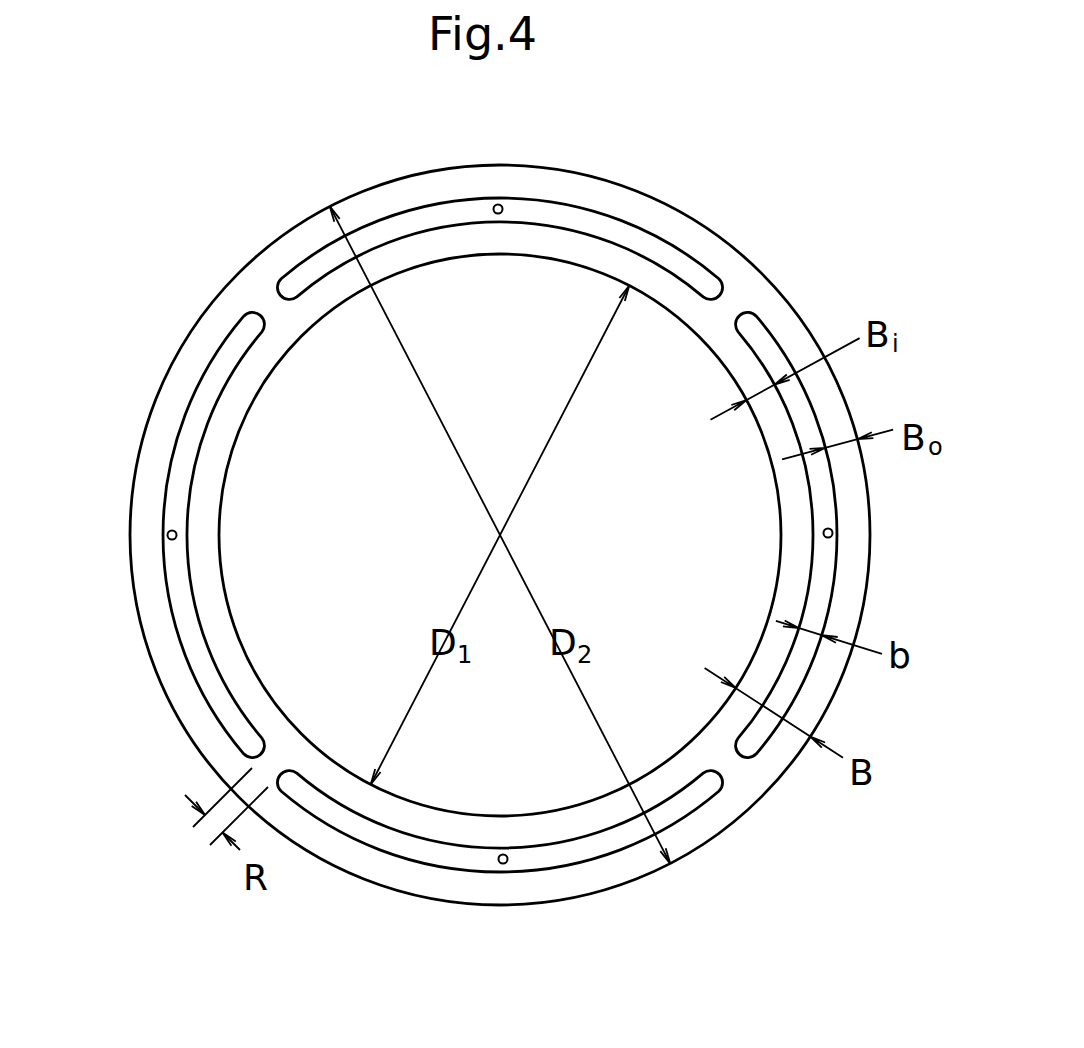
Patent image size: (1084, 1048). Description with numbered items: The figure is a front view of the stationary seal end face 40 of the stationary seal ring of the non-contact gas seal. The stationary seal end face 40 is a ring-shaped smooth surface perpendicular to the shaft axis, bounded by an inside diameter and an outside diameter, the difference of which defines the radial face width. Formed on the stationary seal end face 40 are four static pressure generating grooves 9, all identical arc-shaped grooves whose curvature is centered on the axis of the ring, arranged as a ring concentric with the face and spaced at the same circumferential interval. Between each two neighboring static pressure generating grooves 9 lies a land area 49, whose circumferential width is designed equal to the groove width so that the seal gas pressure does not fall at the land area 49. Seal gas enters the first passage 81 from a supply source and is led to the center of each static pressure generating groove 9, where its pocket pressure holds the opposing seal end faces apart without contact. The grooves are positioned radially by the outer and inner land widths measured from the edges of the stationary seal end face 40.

The stationary seal end face 40 is at (696, 221).
The static pressure generating groove 9 is at (578, 207).
The first passage 81 is at (498, 204).
The land area between grooves 49 is at (263, 307).